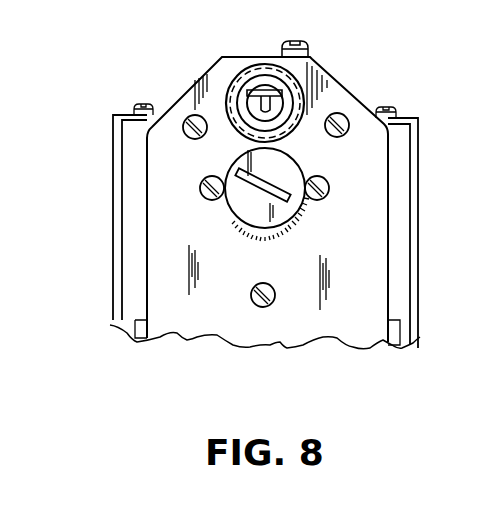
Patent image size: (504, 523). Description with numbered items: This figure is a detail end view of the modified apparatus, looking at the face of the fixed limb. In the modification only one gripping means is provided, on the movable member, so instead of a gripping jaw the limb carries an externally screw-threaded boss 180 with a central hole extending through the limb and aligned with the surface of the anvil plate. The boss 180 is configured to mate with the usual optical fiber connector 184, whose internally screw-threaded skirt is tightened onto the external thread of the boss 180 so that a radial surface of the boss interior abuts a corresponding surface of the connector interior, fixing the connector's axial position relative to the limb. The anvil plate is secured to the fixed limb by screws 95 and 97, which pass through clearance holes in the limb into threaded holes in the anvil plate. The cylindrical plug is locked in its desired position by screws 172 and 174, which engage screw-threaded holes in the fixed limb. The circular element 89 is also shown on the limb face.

The externally screw-threaded boss 180 is at (253, 64).
The optical fiber connector 184 is at (282, 105).
The screw 95 is at (183, 131).
The screw 97 is at (349, 130).
The screw 172 is at (200, 189).
The screw 174 is at (329, 188).
The dial disc 89 is at (235, 215).